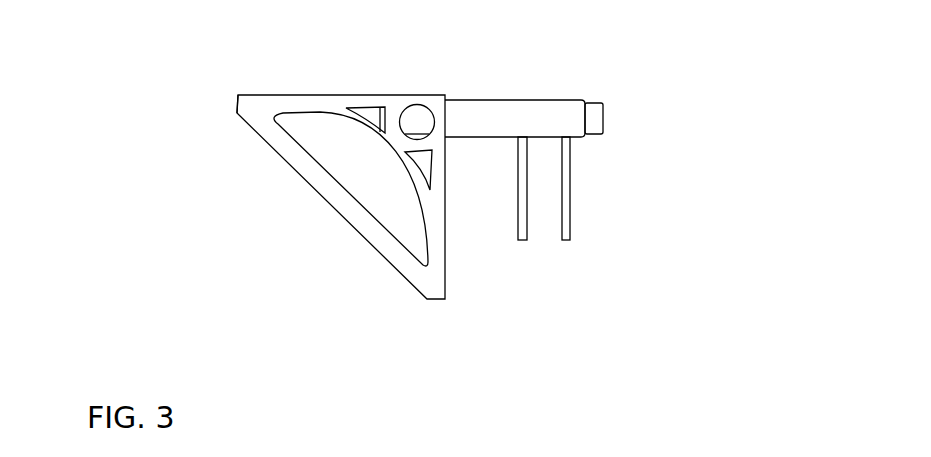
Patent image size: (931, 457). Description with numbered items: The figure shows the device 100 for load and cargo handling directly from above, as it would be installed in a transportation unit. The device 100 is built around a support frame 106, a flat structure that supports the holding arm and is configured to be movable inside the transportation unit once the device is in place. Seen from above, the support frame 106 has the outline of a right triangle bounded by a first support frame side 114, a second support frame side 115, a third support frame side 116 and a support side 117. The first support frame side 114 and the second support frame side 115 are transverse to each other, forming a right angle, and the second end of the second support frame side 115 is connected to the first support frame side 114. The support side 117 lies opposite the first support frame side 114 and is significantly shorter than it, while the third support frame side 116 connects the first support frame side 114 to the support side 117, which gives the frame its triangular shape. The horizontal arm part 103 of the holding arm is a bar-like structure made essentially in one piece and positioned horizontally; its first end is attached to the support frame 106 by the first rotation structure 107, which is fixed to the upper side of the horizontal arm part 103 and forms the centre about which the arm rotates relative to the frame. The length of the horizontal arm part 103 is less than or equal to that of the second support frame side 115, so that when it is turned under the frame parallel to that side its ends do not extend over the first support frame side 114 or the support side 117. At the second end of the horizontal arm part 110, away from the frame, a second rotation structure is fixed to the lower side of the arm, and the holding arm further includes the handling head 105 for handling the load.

The device 100 is at (112, 42).
The horizontal arm part 103 is at (488, 103).
The handling head 105 is at (570, 222).
The support frame 106 is at (303, 85).
The first rotation structure 107 is at (418, 107).
The second end of the horizontal arm part 110 is at (587, 118).
The first support frame side 114 is at (445, 223).
The second support frame side 115 is at (267, 95).
The third support frame side 116 is at (288, 165).
The support side 117 is at (237, 105).